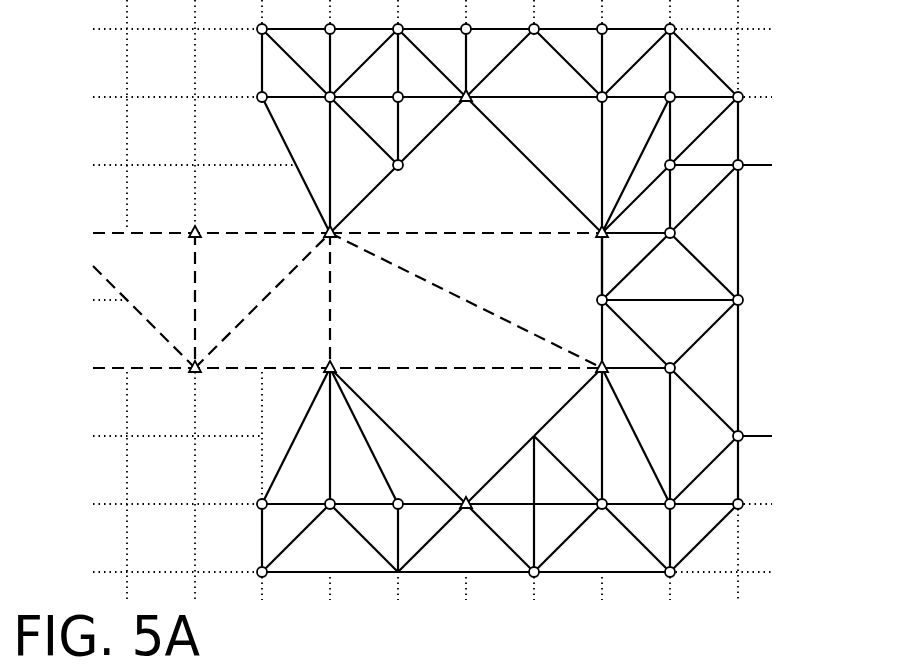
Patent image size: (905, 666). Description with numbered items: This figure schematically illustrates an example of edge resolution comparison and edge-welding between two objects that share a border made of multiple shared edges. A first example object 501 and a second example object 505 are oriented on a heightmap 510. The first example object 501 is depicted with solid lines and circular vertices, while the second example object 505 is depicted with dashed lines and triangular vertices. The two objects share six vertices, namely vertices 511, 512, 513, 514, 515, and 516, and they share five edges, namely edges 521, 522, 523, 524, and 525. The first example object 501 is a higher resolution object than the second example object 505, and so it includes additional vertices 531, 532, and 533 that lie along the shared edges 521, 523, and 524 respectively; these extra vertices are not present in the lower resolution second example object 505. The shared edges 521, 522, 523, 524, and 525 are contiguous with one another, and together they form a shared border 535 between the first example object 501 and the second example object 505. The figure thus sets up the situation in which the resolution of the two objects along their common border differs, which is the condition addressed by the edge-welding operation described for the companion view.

The first example object 501 is at (759, 146).
The second example object 505 is at (104, 216).
The heightmap 510 is at (722, 665).
The shared vertex 511 is at (340, 222).
The shared vertex 512 is at (471, 96).
The shared vertex 513 is at (597, 221).
The shared vertex 514 is at (622, 360).
The shared vertex 515 is at (468, 511).
The shared vertex 516 is at (326, 373).
The shared edge 521 is at (446, 115).
The shared edge 522 is at (518, 155).
The shared edge 523 is at (599, 279).
The shared edge 524 is at (551, 413).
The shared edge 525 is at (428, 428).
The additional vertex 531 is at (404, 167).
The additional vertex 532 is at (597, 300).
The additional vertex 533 is at (521, 432).
The shared border 535 is at (489, 352).